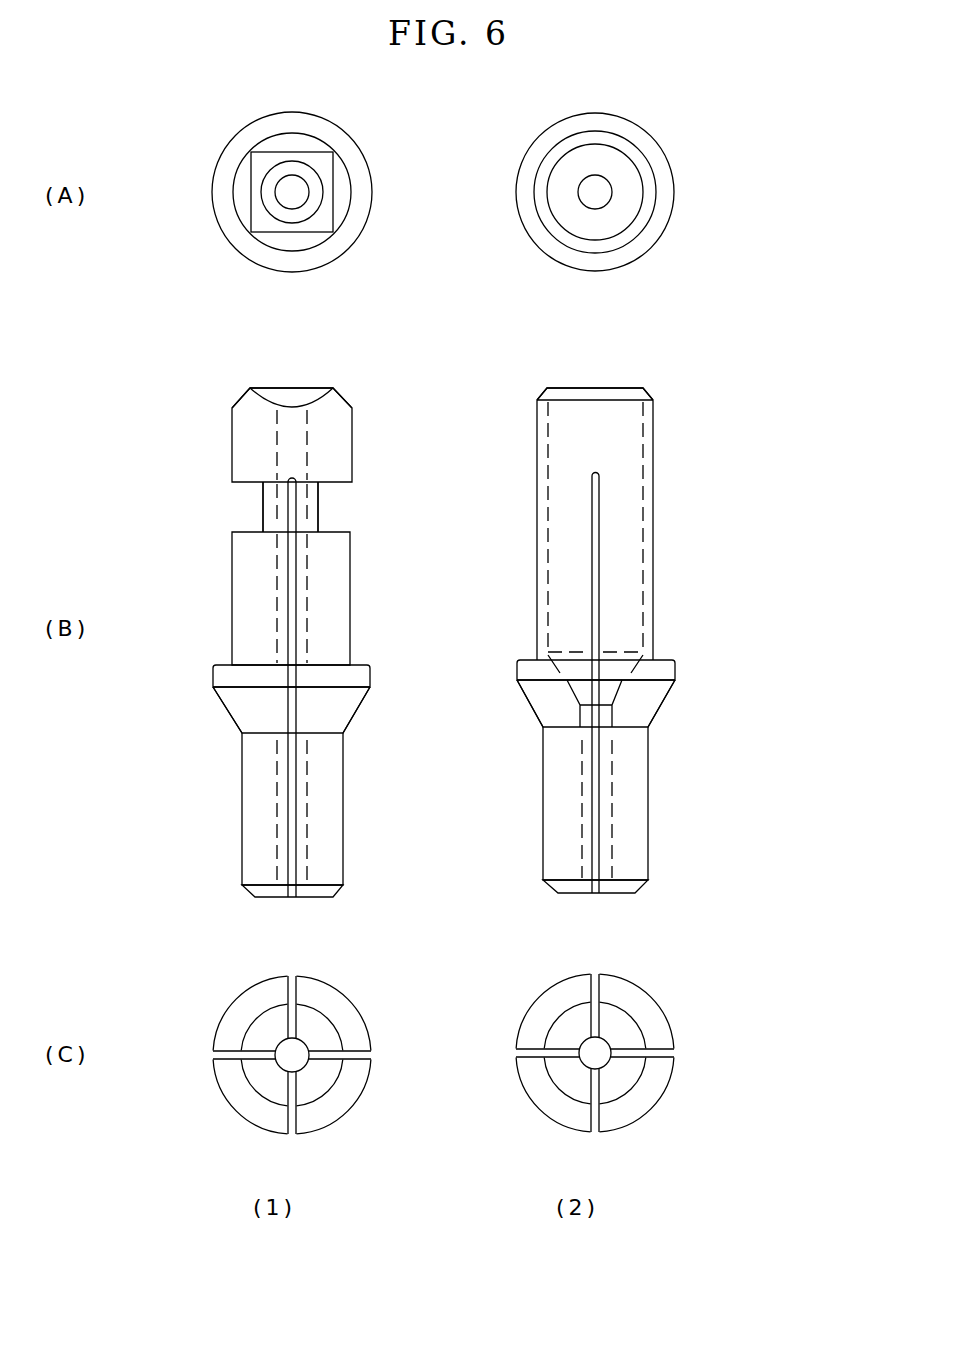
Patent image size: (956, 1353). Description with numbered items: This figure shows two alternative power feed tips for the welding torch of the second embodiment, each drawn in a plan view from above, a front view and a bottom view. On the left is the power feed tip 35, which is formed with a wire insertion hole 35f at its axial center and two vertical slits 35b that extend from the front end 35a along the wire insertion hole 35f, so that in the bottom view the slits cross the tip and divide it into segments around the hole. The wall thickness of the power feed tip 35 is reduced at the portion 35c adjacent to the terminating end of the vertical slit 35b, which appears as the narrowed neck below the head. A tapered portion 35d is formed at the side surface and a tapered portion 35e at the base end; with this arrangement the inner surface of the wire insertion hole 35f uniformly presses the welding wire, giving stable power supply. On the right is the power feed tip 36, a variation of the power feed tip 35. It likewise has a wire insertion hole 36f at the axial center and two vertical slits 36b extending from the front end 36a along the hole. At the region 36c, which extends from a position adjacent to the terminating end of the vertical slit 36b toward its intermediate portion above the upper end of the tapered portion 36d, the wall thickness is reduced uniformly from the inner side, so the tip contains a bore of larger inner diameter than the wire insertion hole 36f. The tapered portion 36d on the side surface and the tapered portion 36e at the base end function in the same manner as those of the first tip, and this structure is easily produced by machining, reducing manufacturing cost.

The power feed tip 35 is at (353, 430).
The front end 35a is at (335, 897).
The vertical slit 35b is at (292, 780).
The reduced wall thickness portion 35c is at (318, 505).
The tapered portion 35d is at (363, 707).
The tapered portion 35e is at (347, 393).
The wire insertion hole 35f is at (310, 190).
The power feed tip 36 is at (655, 430).
The front end 36a is at (635, 893).
The vertical slit 36b is at (597, 778).
The reduced wall thickness region 36c is at (648, 505).
The tapered portion 36d is at (665, 705).
The tapered portion 36e is at (650, 393).
The wire insertion hole 36f is at (612, 190).